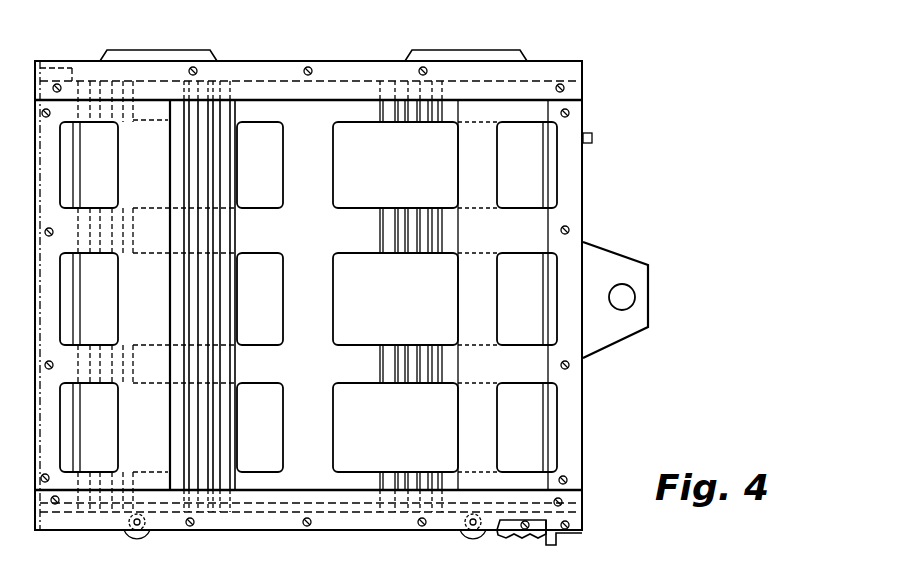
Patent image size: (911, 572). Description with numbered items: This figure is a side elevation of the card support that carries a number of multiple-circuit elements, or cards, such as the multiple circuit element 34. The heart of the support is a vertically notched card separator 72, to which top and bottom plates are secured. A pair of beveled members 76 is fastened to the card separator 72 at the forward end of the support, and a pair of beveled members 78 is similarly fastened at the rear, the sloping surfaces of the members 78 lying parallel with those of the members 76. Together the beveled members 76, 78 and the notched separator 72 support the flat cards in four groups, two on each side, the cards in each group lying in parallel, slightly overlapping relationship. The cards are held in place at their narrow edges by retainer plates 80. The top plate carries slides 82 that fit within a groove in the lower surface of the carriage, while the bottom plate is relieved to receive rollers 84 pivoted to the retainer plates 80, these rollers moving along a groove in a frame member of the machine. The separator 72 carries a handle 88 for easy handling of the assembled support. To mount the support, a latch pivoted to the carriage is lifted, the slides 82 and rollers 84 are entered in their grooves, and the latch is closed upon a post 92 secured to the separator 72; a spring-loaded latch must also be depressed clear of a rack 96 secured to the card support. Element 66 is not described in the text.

The multiple circuit element 34 is at (238, 302).
The mounting frame 66 is at (300, 58).
The card separator 72 is at (340, 165).
The beveled members 76 is at (582, 180).
The beveled members 78 is at (152, 178).
The retainer plates 80 is at (359, 68).
The slides 82 is at (173, 50).
The rollers 84 is at (128, 538).
The handle 88 is at (622, 258).
The post 92 is at (592, 134).
The rack 96 is at (556, 540).